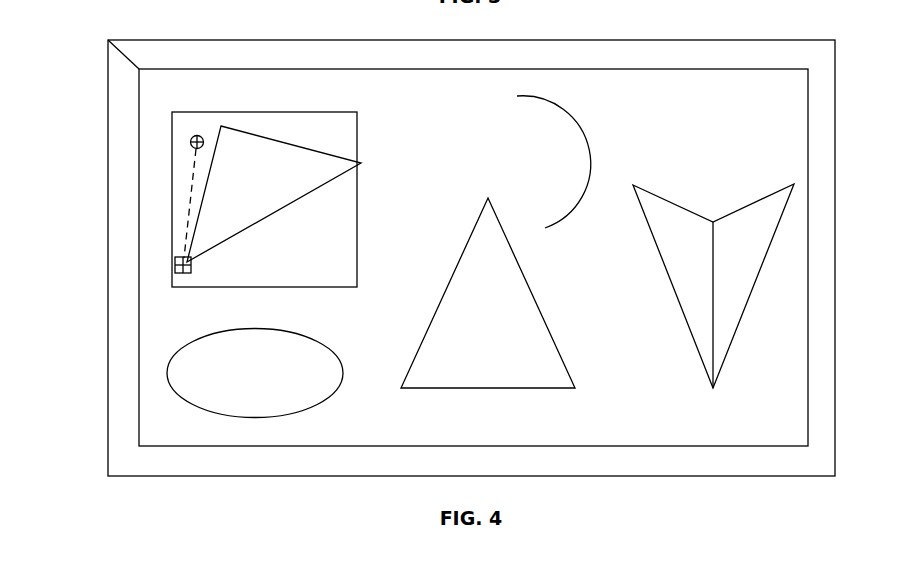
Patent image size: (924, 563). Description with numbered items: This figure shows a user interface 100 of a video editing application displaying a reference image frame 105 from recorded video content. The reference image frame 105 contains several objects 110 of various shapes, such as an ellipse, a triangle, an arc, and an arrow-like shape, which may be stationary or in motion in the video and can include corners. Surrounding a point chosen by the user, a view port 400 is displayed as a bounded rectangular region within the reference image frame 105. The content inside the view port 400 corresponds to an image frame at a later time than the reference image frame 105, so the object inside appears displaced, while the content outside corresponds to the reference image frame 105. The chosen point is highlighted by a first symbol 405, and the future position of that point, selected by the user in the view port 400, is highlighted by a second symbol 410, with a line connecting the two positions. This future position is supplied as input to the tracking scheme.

The user interface 100 is at (108, 126).
The reference image frame 105 is at (108, 40).
The objects 110 is at (169, 359).
The view port 400 is at (172, 213).
The first symbol 405 is at (190, 143).
The second symbol 410 is at (176, 264).